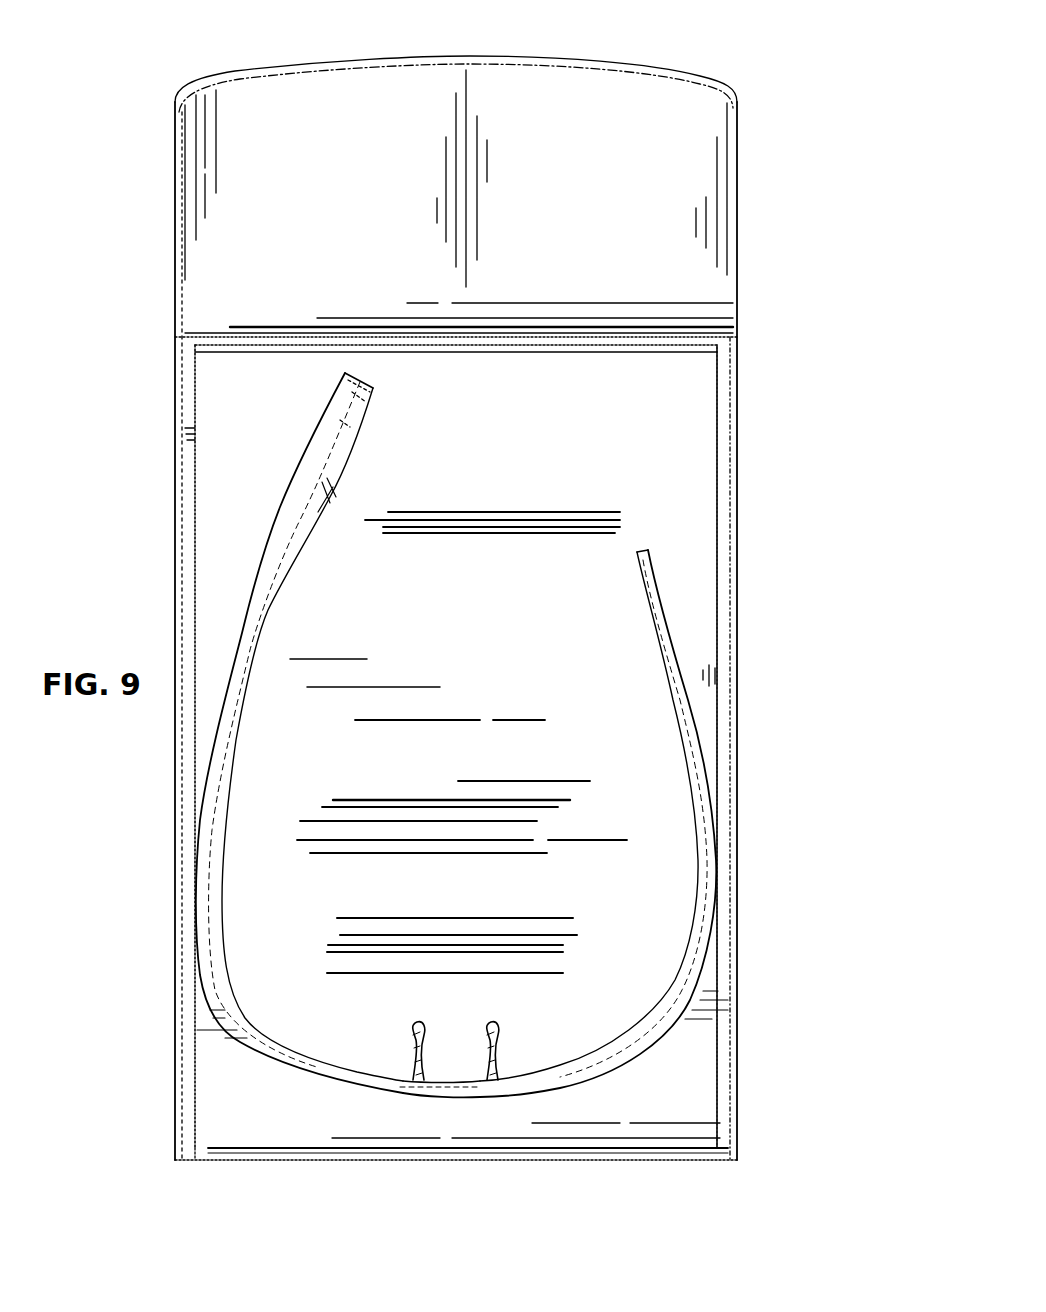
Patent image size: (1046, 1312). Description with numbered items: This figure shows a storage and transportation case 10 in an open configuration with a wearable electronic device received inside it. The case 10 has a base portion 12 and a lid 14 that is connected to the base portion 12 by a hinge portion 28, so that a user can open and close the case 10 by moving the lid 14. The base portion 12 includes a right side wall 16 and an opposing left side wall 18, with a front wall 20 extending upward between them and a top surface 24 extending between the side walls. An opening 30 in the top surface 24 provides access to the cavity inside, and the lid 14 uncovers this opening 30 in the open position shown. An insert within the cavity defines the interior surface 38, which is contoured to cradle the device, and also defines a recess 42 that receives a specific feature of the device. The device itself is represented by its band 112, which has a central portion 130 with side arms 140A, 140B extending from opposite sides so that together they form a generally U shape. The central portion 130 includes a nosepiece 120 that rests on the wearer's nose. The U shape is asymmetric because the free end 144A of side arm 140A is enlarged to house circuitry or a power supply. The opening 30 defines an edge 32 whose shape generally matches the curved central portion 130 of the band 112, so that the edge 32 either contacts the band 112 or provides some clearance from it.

The storage and transportation case 10 is at (178, 32).
The base portion 12 is at (141, 484).
The lid 14 is at (667, 226).
The right side wall 16 is at (740, 570).
The left side wall 18 is at (174, 638).
The front wall 20 is at (312, 1137).
The top surface 24 is at (208, 1075).
The hinge portion 28 is at (700, 327).
The opening 30 is at (693, 438).
The edge 32 is at (717, 618).
The interior surface 38 is at (478, 690).
The recess 42 is at (327, 503).
The band 112 is at (705, 938).
The nosepiece 120 is at (446, 1041).
The central portion 130 is at (477, 1088).
The side arm 140A is at (225, 793).
The side arm 140B is at (692, 753).
The free end 144A is at (328, 458).